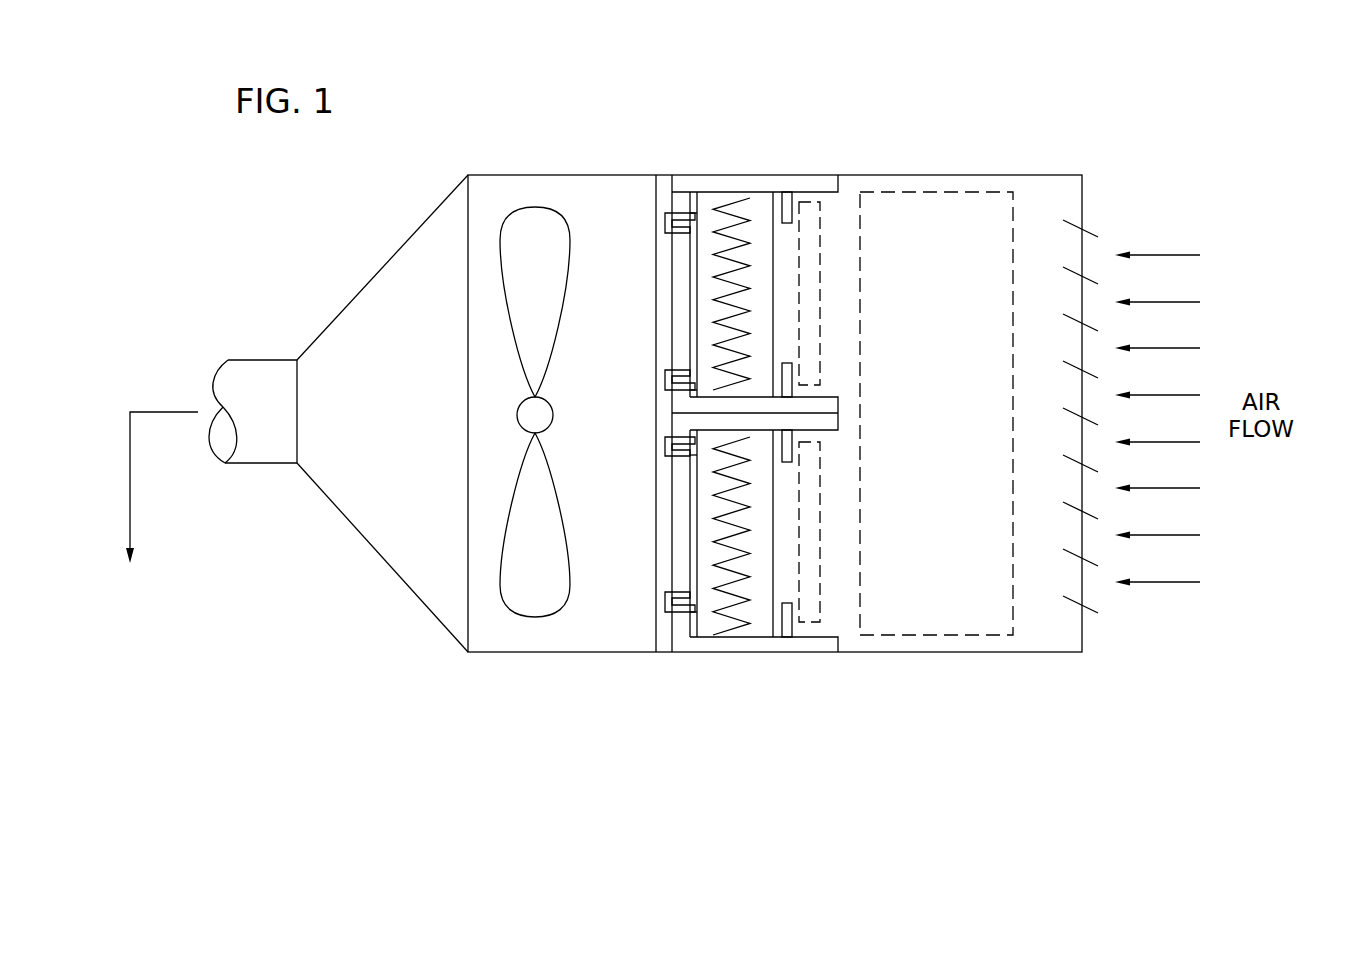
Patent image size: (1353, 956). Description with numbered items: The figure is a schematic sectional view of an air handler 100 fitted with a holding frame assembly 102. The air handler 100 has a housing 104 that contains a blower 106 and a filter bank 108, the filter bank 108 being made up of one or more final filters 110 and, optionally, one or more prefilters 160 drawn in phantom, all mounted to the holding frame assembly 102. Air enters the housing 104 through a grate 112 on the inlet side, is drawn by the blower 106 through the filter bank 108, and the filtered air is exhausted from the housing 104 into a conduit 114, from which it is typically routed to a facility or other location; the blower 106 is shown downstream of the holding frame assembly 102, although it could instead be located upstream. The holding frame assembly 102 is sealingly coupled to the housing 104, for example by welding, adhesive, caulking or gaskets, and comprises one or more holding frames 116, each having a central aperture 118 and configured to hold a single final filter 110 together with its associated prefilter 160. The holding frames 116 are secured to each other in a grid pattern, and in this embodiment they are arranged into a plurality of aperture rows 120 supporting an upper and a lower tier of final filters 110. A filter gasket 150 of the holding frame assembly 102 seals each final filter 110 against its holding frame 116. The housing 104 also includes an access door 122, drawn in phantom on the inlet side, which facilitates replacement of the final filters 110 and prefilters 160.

The air handler 100 is at (860, 66).
The holding frame assembly 102 is at (695, 180).
The housing 104 is at (507, 173).
The blower 106 is at (503, 547).
The filter bank 108 is at (682, 122).
The final filter 110 is at (729, 192).
The grate 112 is at (1103, 220).
The conduit 114 is at (253, 360).
The holding frame 116 is at (760, 181).
The central aperture 118 is at (688, 283).
The aperture row 120 is at (703, 255).
The access door 122 is at (963, 637).
The filter gasket 150 is at (665, 222).
The prefilter 160 is at (820, 300).